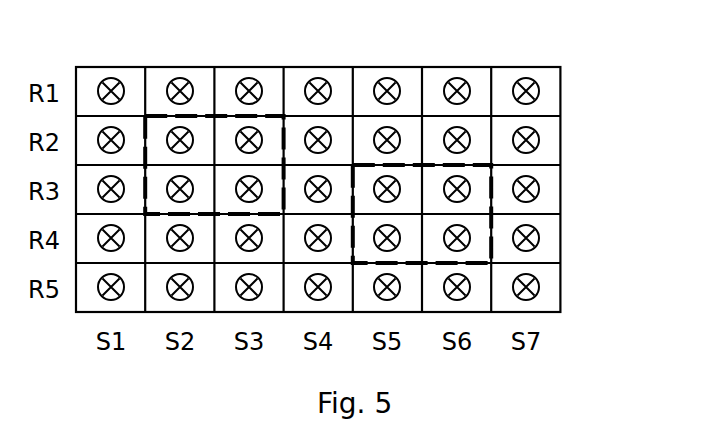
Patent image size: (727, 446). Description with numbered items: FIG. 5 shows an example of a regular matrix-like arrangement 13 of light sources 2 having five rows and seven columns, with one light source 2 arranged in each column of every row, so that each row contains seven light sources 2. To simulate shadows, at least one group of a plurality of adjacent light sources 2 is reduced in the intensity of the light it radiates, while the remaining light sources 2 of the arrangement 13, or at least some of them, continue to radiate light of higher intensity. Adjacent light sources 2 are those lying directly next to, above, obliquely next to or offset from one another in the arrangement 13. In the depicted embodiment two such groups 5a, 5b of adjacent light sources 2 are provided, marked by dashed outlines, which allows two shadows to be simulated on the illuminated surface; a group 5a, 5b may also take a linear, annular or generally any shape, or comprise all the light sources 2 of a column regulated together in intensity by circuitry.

The light source 2 is at (250, 73).
The group of adjacent light sources 5a is at (284, 120).
The group of adjacent light sources 5b is at (436, 168).
The arrangement of light sources 13 is at (580, 116).